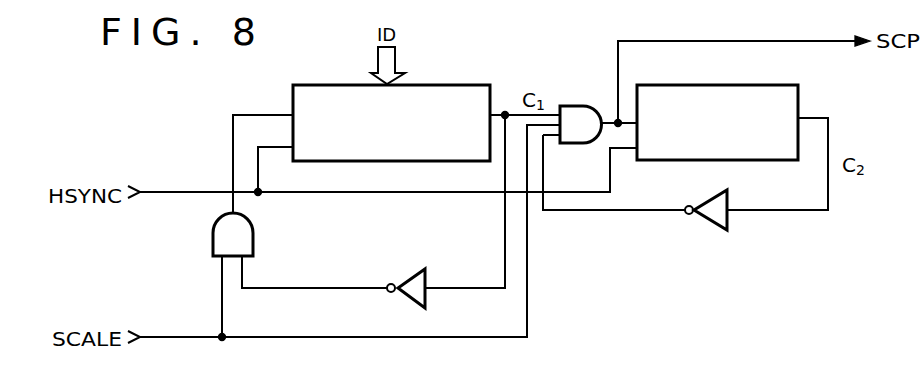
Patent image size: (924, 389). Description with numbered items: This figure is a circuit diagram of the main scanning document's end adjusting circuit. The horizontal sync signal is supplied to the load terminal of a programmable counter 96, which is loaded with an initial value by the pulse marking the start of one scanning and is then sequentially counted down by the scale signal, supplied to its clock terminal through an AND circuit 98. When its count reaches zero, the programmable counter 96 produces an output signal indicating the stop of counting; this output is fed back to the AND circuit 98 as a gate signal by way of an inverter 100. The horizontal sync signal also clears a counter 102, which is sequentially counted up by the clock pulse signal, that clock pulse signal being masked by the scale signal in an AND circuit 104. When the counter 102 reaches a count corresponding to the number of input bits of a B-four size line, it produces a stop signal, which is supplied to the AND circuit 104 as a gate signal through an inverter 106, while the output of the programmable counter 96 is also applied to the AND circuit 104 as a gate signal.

The programmable counter 96 is at (462, 85).
The AND circuit 98 is at (254, 239).
The inverter 100 is at (414, 270).
The counter 102 is at (757, 85).
The AND circuit 104 is at (584, 106).
The inverter 106 is at (707, 223).